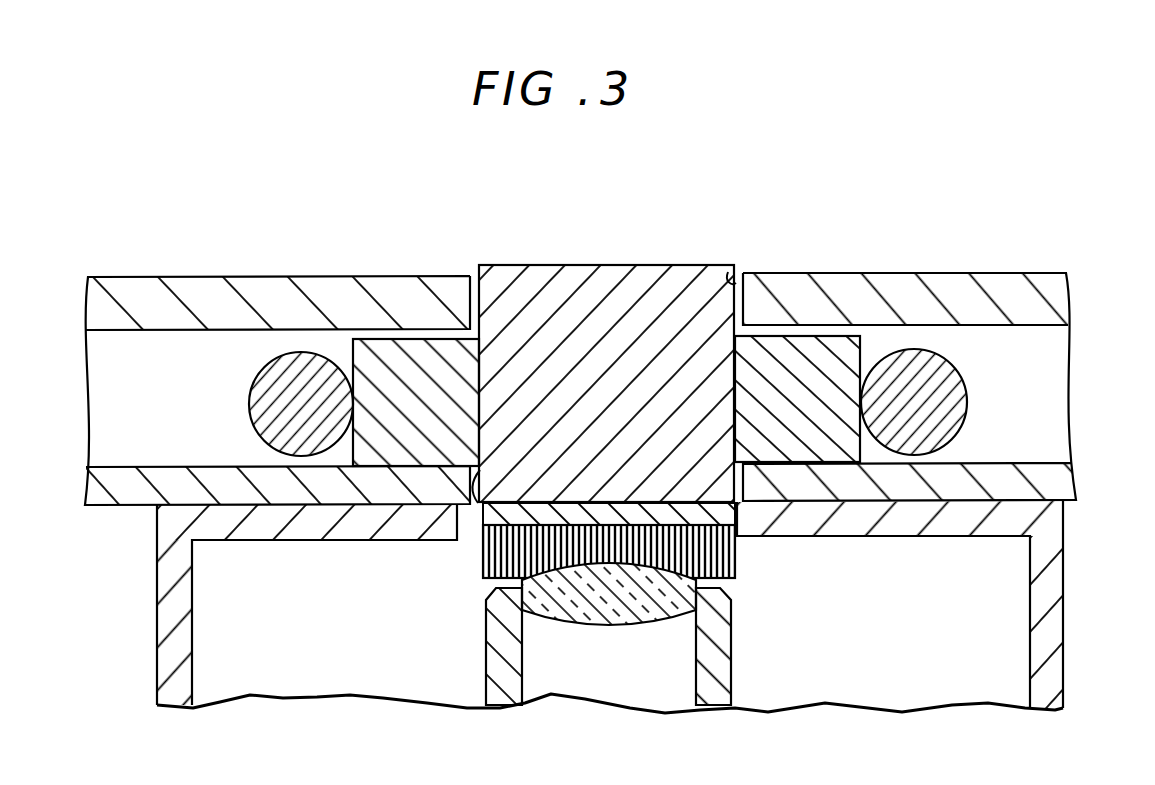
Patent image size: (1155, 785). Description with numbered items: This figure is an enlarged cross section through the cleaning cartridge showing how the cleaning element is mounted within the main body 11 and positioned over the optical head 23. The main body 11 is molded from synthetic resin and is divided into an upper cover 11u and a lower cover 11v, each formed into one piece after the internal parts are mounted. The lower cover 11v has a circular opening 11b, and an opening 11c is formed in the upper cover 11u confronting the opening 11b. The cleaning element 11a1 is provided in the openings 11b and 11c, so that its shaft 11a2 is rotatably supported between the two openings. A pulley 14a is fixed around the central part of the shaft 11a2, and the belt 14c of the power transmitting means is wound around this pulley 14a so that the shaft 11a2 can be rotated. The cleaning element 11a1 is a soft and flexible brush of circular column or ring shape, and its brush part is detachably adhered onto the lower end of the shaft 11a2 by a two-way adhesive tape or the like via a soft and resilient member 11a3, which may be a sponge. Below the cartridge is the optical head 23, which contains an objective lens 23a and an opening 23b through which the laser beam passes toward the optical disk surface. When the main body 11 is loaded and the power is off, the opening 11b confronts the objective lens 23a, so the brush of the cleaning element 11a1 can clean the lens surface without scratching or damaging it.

The main body 11 is at (291, 228).
The upper cover 11u is at (903, 272).
The lower cover 11v is at (110, 507).
The shaft 11a2 is at (572, 282).
The opening 11c is at (728, 272).
The circular opening 11b is at (477, 497).
The opening 23b is at (460, 528).
The pulley 14a is at (834, 462).
The belt 14c is at (962, 384).
The soft and resilient member 11a3 is at (740, 512).
The cleaning element 11a1 is at (736, 577).
The objective lens 23a is at (560, 622).
The optical head 23 is at (1055, 648).